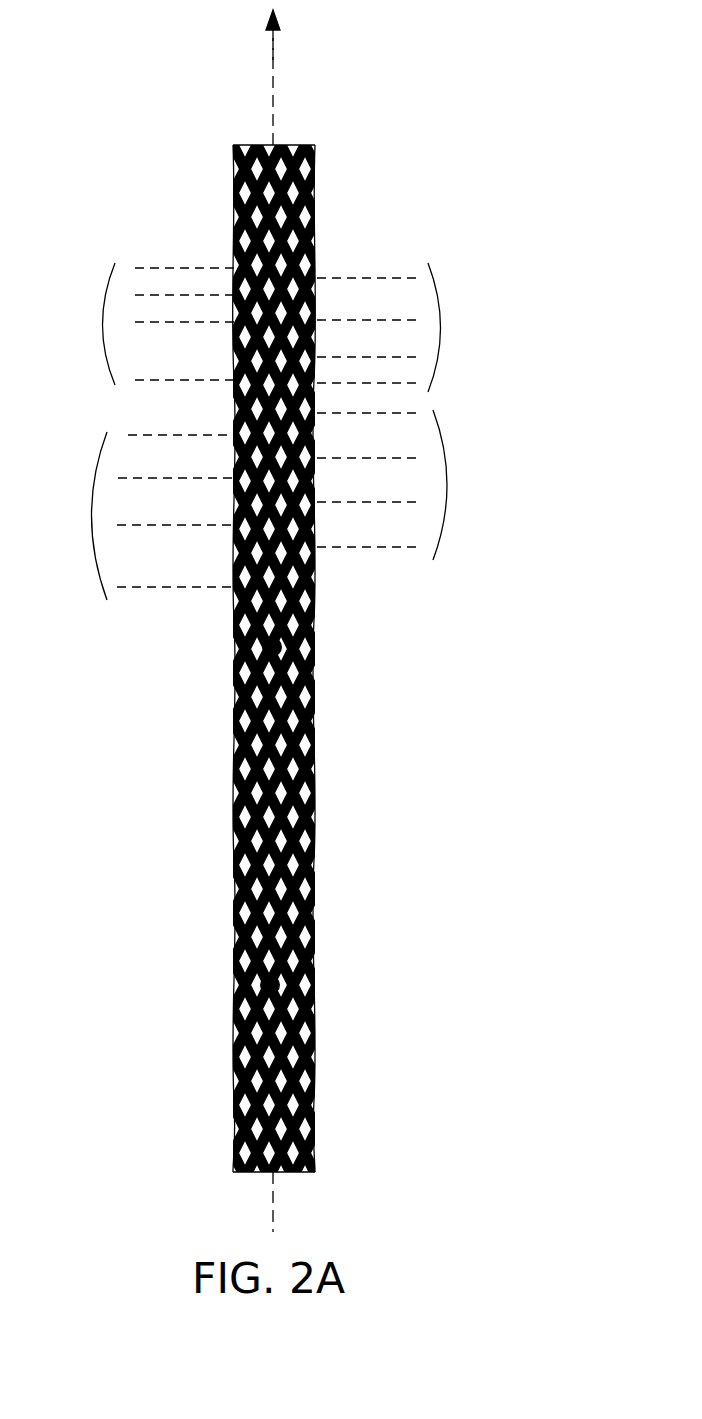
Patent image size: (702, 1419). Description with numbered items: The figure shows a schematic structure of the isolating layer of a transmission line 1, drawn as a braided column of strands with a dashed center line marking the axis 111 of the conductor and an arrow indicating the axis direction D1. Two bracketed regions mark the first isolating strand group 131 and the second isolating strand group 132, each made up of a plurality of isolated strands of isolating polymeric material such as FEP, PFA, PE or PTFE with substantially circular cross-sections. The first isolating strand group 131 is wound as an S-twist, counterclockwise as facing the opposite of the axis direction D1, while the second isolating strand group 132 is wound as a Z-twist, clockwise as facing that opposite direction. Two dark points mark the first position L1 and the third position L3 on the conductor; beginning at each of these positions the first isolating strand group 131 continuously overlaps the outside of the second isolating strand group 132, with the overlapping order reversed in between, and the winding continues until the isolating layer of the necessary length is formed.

The transmission line 1 is at (512, 155).
The axis 111 is at (273, 102).
The axis direction D1 is at (273, 31).
The second isolating strand group 132 is at (276, 327).
The first isolating strand group 131 is at (273, 505).
The third position L3 is at (282, 650).
The first position L1 is at (280, 988).